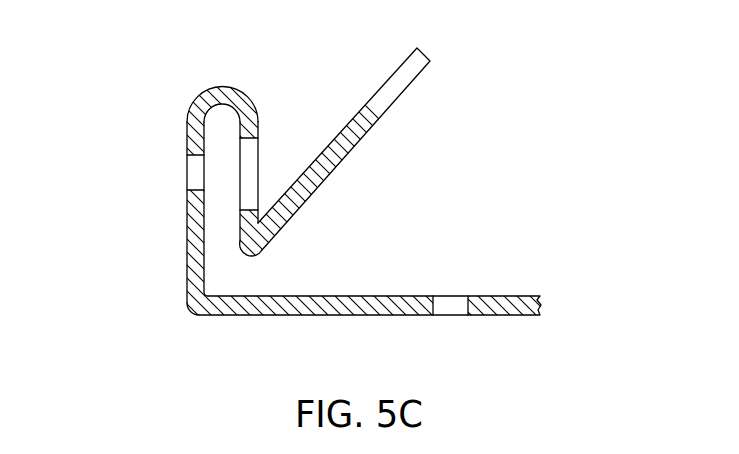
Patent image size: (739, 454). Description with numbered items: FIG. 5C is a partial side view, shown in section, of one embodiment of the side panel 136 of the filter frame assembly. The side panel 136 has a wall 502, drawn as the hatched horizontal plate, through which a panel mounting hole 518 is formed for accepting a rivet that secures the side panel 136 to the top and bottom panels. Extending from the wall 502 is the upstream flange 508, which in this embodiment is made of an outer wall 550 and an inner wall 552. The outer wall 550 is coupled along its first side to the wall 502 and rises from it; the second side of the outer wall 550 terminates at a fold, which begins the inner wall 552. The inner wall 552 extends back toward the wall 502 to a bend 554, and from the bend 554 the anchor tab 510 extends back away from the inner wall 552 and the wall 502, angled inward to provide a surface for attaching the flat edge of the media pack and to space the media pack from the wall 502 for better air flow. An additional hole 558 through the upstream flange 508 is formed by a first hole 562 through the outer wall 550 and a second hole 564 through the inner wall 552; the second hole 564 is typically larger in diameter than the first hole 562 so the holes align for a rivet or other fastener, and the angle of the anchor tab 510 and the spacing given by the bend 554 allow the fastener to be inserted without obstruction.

The side panel 136 is at (533, 62).
The wall 502 is at (370, 303).
The upstream flange 508 is at (277, 174).
The anchor tab 510 is at (402, 95).
The panel mounting hole 518 is at (467, 313).
The outer wall 550 is at (187, 252).
The inner wall 552 is at (258, 110).
The bend 554 is at (264, 252).
The additional hole 558 is at (175, 177).
The first hole 562 is at (197, 158).
The second hole 564 is at (245, 210).